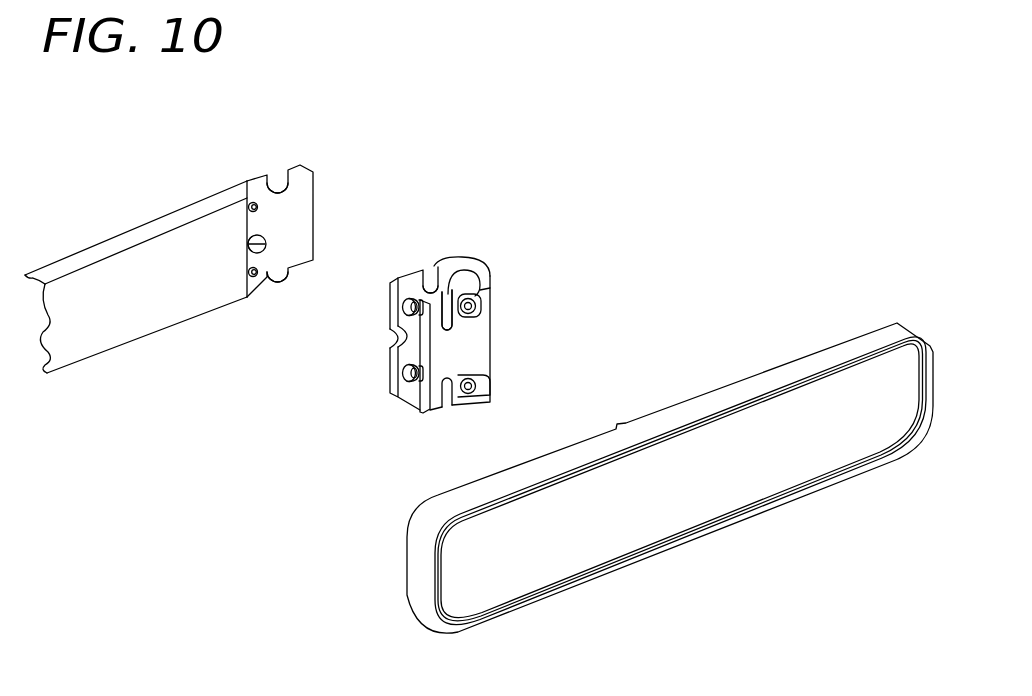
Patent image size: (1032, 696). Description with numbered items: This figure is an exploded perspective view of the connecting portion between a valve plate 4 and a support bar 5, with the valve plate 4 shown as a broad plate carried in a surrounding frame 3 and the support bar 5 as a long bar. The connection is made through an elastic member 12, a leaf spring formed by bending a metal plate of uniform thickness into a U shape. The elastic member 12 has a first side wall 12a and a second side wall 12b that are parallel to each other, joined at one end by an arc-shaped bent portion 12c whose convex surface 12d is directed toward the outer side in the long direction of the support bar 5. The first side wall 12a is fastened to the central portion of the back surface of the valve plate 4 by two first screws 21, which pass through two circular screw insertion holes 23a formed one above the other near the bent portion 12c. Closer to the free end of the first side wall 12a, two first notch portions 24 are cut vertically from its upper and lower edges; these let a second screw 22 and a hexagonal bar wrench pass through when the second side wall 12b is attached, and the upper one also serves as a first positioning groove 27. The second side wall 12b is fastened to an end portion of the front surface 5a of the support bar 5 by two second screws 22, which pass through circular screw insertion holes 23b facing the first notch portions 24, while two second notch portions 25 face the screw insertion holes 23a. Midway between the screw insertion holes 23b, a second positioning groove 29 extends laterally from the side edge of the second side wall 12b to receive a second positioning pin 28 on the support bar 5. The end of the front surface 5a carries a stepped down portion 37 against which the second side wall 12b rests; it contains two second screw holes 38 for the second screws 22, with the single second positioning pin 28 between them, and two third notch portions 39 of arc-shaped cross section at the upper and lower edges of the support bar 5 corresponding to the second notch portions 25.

The mirror body 3 is at (623, 422).
The valve plate 4 is at (757, 467).
The support bar 5 is at (93, 253).
The front surface of the support bar 5a is at (98, 325).
The elastic member 12 is at (434, 315).
The first side wall 12a is at (460, 347).
The second side wall 12b is at (392, 353).
The bent portion 12c is at (455, 262).
The convex surface 12d is at (489, 262).
The first screw 21 is at (476, 307).
The second screw 22 is at (415, 299).
The screw insertion hole 23a is at (463, 299).
The screw insertion hole 23b is at (403, 302).
The first notch portion 24 is at (436, 316).
The second notch portion 25 is at (428, 276).
The first positioning groove 27 is at (519, 317).
The second positioning pin 28 is at (248, 244).
The second positioning groove 29 is at (393, 337).
The stepped down portion 37 is at (302, 203).
The second screw hole 38 is at (249, 206).
The third notch portion 39 is at (277, 196).